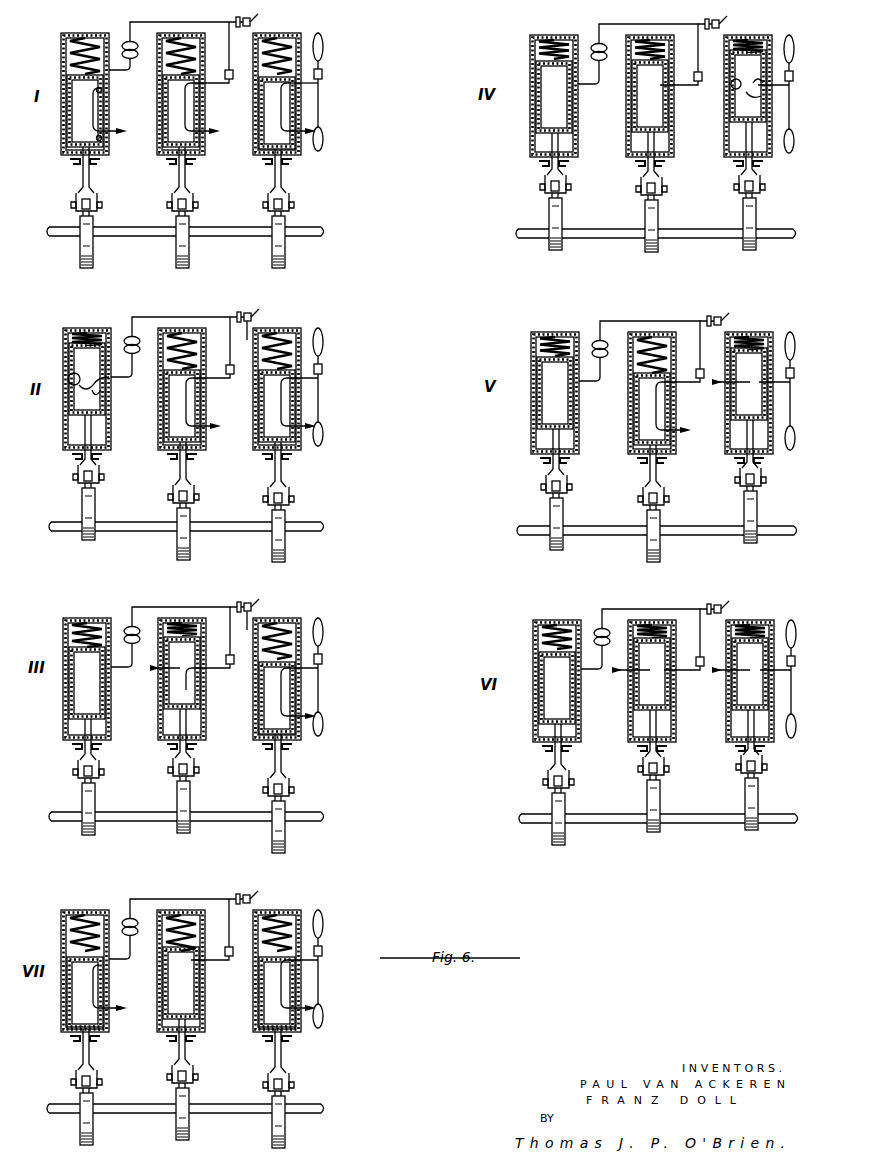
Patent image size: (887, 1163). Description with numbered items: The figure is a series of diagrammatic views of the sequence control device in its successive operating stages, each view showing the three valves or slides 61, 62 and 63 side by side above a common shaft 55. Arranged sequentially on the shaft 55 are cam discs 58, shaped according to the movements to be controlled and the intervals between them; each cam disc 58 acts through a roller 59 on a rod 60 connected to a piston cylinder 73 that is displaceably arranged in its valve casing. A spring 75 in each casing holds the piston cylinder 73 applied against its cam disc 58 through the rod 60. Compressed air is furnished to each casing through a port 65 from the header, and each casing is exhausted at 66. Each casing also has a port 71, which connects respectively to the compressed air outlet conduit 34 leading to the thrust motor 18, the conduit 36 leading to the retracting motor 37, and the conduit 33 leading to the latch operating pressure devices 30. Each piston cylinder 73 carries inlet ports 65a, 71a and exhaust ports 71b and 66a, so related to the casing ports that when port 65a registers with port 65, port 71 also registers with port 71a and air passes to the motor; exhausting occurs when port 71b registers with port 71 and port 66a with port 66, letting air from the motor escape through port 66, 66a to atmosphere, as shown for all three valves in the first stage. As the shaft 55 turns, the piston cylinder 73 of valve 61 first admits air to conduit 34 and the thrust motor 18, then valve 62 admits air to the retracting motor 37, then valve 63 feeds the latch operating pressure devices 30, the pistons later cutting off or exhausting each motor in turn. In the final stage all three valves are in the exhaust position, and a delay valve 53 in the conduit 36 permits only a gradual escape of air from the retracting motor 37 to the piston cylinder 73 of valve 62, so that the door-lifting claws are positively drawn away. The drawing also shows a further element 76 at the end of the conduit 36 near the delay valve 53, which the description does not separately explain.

The thrust motor 18 is at (132, 59).
The latch operating pressure device 30 is at (323, 48).
The compressed air outlet conduit 33 is at (323, 83).
The compressed air outlet conduit 34 is at (131, 70).
The compressed air outlet conduit 36 is at (182, 22).
The retracting motor 37 is at (132, 44).
The delay valve 53 is at (228, 69).
The shaft 55 is at (240, 237).
The cam disc 58 is at (93, 256).
The roller 59 is at (103, 206).
The rod 60 is at (92, 181).
The valve 61 is at (63, 133).
The valve 62 is at (206, 101).
The valve 63 is at (303, 158).
The port 65 is at (61, 396).
The inlet port 65a is at (66, 372).
The exhaust 66 is at (107, 131).
The exhaust port 66a is at (103, 142).
The port 71 is at (107, 80).
The inlet port 71a is at (101, 397).
The exhaust port 71b is at (101, 98).
The piston cylinder 73 is at (255, 138).
The spring 75 is at (74, 52).
The valve 76 is at (252, 20).